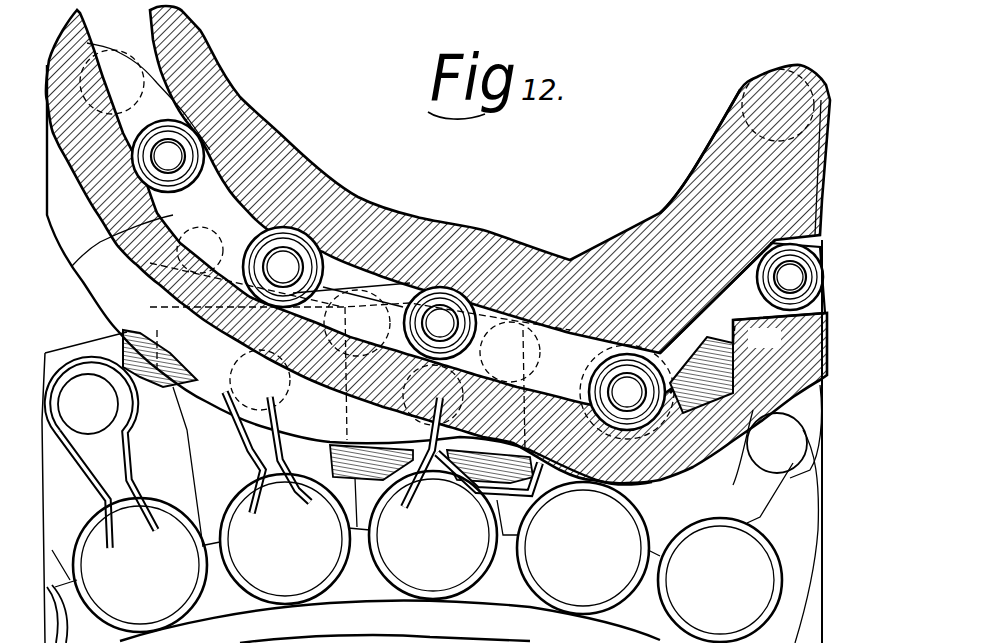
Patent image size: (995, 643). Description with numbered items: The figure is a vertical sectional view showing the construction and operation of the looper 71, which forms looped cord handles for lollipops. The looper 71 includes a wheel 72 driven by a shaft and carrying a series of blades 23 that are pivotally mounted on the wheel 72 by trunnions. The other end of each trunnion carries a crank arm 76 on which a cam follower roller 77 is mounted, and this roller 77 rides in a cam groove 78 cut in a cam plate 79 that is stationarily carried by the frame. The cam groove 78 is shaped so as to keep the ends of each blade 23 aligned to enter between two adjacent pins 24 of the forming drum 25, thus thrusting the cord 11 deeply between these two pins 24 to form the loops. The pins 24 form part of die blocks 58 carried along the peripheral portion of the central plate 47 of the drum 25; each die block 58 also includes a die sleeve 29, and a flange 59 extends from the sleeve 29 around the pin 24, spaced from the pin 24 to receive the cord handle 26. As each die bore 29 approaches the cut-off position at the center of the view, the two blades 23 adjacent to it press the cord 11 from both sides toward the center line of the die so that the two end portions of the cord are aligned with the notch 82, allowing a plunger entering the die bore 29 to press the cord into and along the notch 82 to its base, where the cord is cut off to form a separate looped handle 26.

The cord 11 is at (670, 387).
The blade 23 is at (127, 358).
The pin 24 is at (102, 407).
The drum 25 is at (68, 345).
The looped handle 26 is at (232, 443).
The die sleeve 29 is at (153, 617).
The central plate 47 is at (490, 637).
The die block 58 is at (243, 598).
The flange 59 is at (383, 577).
The looper 71 is at (694, 178).
The wheel 72 is at (97, 275).
The crank arm 76 is at (234, 232).
The cam follower roller 77 is at (317, 283).
The cam groove 78 is at (412, 243).
The cam plate 79 is at (90, 262).
The notch 82 is at (437, 450).